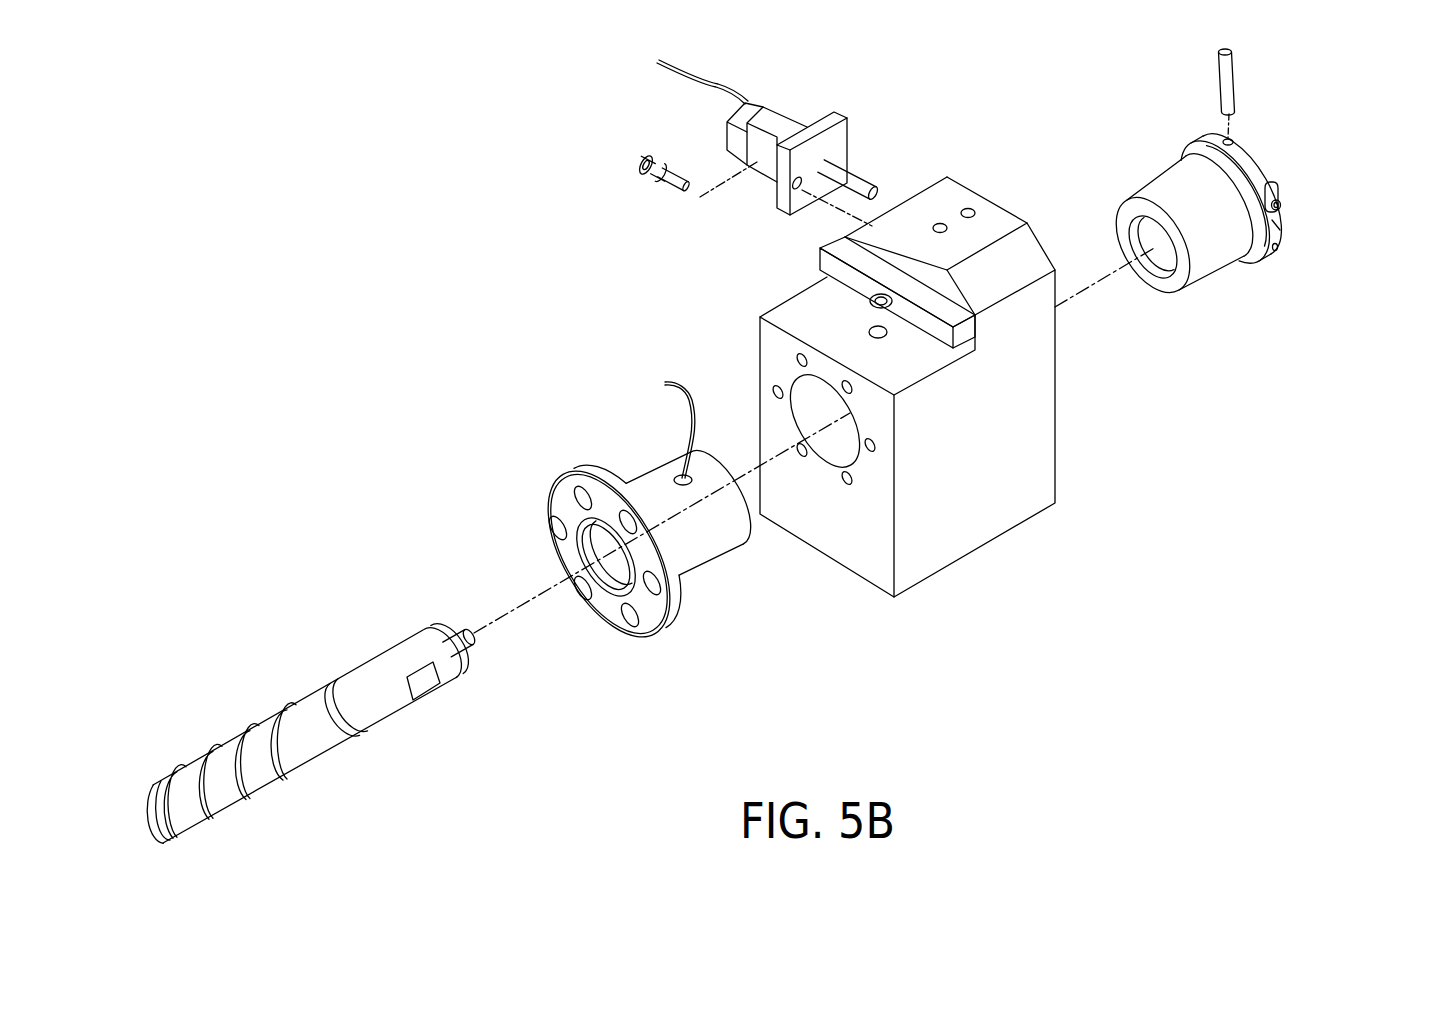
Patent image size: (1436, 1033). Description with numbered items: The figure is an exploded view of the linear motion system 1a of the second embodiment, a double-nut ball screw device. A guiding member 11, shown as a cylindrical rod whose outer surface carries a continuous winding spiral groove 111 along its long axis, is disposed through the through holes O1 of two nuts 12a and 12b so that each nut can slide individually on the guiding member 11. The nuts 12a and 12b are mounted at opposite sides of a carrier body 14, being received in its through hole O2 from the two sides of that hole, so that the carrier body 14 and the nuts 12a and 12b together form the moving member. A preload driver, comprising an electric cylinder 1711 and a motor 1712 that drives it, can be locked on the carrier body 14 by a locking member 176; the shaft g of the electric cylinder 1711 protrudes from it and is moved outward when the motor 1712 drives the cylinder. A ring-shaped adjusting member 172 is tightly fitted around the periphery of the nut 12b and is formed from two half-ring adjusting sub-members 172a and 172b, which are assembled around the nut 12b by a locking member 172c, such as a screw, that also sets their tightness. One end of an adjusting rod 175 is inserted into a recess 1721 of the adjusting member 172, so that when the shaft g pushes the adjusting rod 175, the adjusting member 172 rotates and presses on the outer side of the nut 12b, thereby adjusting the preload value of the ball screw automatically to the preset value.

The linear motion system 1a is at (478, 236).
The guiding member 11 is at (258, 712).
The spiral groove 111 is at (235, 745).
The nut 12a is at (711, 540).
The nut 12b is at (1175, 197).
The carrier body 14 is at (806, 304).
The through hole O1 is at (603, 547).
The through hole O2 is at (806, 401).
The electric cylinder 1711 is at (790, 121).
The motor 1712 is at (757, 105).
The shaft g is at (859, 182).
The locking member 176 is at (668, 177).
The adjusting rod 175 is at (1227, 79).
The adjusting member 172 is at (1372, 155).
The recess 1721 is at (1223, 138).
The adjusting sub-member 172a is at (1285, 217).
The adjusting sub-member 172b is at (1283, 230).
The locking member 172c is at (1278, 208).